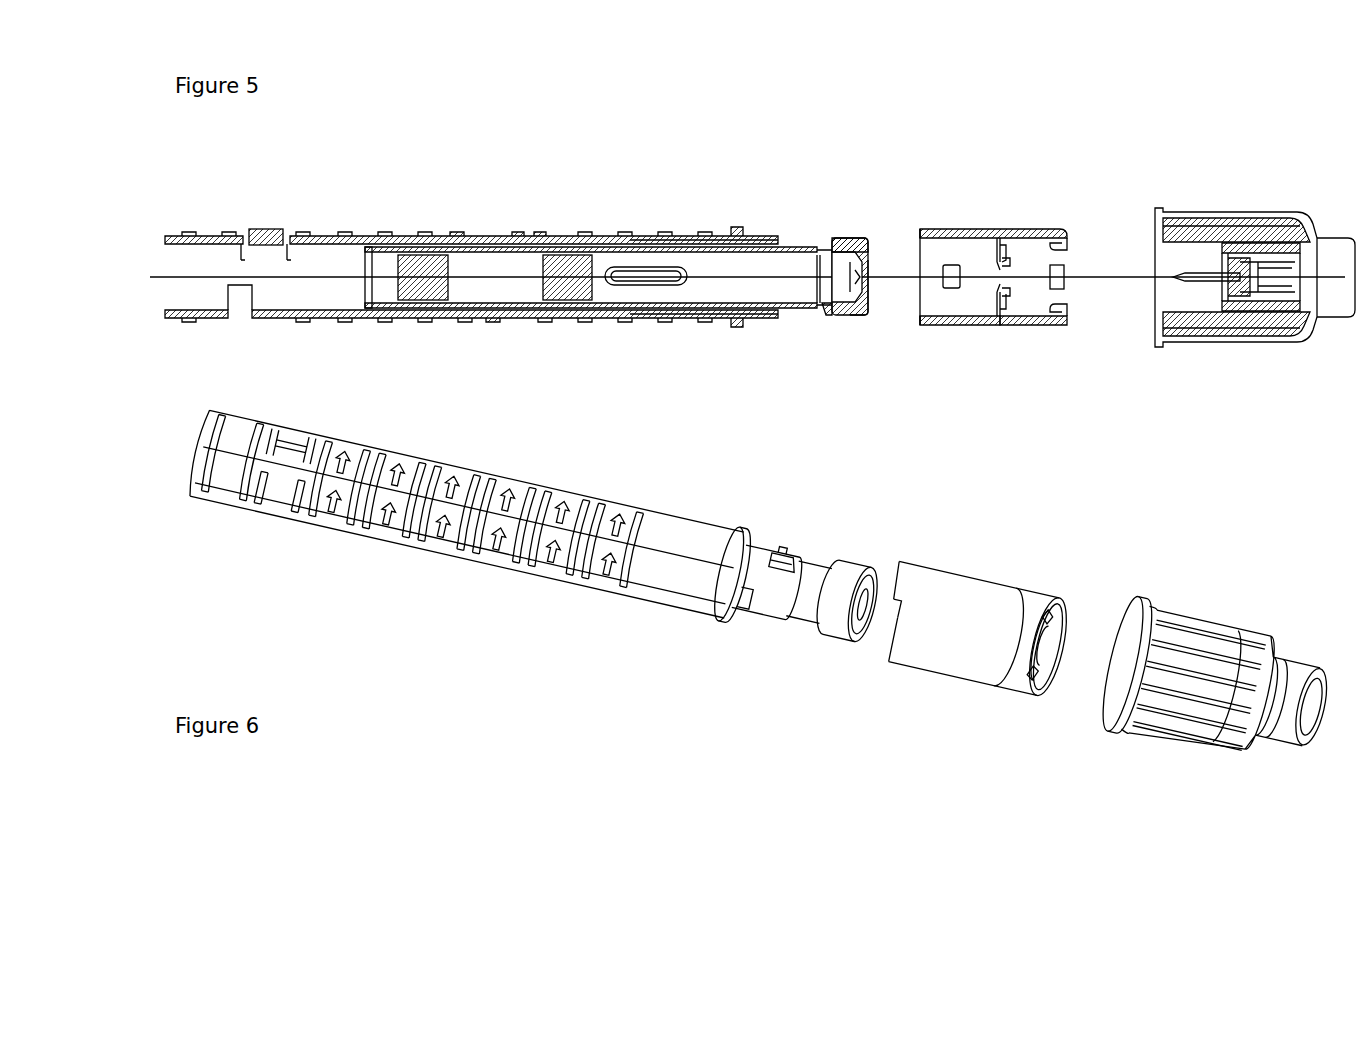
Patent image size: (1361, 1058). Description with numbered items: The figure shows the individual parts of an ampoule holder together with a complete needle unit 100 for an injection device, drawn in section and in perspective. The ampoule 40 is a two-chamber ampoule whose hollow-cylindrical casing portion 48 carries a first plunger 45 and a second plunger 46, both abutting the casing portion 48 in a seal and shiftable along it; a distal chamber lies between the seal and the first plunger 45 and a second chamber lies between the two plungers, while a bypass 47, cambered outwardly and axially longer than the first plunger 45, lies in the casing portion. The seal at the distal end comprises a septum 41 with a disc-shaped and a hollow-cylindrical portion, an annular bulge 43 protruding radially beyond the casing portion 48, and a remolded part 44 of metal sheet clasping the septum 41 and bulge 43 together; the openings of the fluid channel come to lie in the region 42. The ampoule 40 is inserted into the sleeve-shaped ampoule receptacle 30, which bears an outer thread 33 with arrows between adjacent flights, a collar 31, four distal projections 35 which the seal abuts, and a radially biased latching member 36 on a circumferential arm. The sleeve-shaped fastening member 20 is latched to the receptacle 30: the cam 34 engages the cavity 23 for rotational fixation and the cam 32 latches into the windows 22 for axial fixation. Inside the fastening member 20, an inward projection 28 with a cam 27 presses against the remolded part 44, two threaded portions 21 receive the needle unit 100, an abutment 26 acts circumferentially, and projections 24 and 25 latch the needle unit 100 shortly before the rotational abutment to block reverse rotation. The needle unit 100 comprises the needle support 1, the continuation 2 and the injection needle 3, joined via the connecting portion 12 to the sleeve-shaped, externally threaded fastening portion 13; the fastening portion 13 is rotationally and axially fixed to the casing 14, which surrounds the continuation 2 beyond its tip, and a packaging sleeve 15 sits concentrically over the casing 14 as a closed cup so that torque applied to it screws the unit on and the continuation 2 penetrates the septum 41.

In FIG. 5, the needle unit 100 is at (1186, 194).
In FIG. 6, the needle unit 100 is at (1229, 594).
In FIG. 5, the needle support 1 is at (1249, 313).
In FIG. 5, the continuation 2 is at (1200, 282).
In FIG. 5, the injection needle 3 is at (1283, 338).
In FIG. 5, the connecting portion 12 is at (1223, 310).
In FIG. 5, the fastening portion 13 is at (1261, 243).
In FIG. 5, the casing 14 is at (1227, 217).
In FIG. 5, the packaging sleeve 15 is at (1202, 215).
In FIG. 5, the fastening member 20 is at (1026, 231).
In FIG. 6, the fastening member 20 is at (989, 592).
In FIG. 5, the threaded portions 21 is at (1064, 232).
In FIG. 6, the threaded portions 21 is at (1052, 668).
In FIG. 5, the windows 22 is at (951, 263).
In FIG. 6, the windows 22 is at (952, 571).
In FIG. 5, the cavity 23 is at (925, 326).
In FIG. 6, the cavity 23 is at (902, 602).
In FIG. 6, the projections 24 is at (1062, 608).
In FIG. 5, the projections 25 is at (1006, 246).
In FIG. 5, the abutment 26 is at (996, 244).
In FIG. 5, the cam 27 is at (996, 300).
In FIG. 5, the projection 28 is at (1012, 318).
In FIG. 5, the ampoule receptacle 30 is at (692, 233).
In FIG. 5, the collar 31 is at (740, 228).
In FIG. 6, the cam 32 is at (772, 533).
In FIG. 5, the outer thread 33 is at (540, 232).
In FIG. 6, the outer thread 33 is at (544, 482).
In FIG. 6, the cam 34 is at (730, 610).
In FIG. 6, the projections 35 is at (790, 562).
In FIG. 5, the latching member 36 is at (272, 229).
In FIG. 5, the ampoule 40 is at (794, 244).
In FIG. 5, the septum 41 is at (866, 243).
In FIG. 5, the region 42 is at (826, 306).
In FIG. 5, the bulge 43 is at (847, 237).
In FIG. 5, the remolded part 44 is at (868, 308).
In FIG. 5, the first plunger 45 is at (579, 234).
In FIG. 5, the second plunger 46 is at (455, 231).
In FIG. 5, the bypass 47 is at (642, 286).
In FIG. 5, the casing portion 48 is at (492, 321).